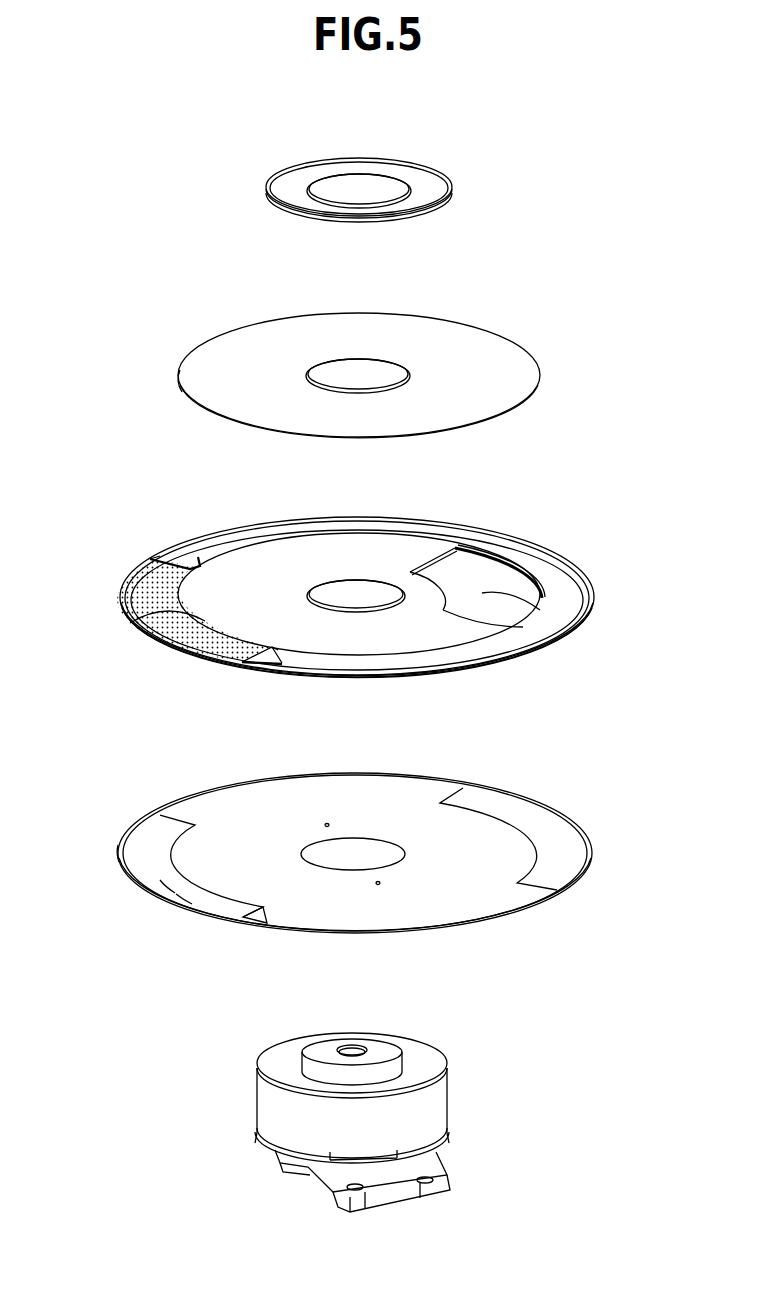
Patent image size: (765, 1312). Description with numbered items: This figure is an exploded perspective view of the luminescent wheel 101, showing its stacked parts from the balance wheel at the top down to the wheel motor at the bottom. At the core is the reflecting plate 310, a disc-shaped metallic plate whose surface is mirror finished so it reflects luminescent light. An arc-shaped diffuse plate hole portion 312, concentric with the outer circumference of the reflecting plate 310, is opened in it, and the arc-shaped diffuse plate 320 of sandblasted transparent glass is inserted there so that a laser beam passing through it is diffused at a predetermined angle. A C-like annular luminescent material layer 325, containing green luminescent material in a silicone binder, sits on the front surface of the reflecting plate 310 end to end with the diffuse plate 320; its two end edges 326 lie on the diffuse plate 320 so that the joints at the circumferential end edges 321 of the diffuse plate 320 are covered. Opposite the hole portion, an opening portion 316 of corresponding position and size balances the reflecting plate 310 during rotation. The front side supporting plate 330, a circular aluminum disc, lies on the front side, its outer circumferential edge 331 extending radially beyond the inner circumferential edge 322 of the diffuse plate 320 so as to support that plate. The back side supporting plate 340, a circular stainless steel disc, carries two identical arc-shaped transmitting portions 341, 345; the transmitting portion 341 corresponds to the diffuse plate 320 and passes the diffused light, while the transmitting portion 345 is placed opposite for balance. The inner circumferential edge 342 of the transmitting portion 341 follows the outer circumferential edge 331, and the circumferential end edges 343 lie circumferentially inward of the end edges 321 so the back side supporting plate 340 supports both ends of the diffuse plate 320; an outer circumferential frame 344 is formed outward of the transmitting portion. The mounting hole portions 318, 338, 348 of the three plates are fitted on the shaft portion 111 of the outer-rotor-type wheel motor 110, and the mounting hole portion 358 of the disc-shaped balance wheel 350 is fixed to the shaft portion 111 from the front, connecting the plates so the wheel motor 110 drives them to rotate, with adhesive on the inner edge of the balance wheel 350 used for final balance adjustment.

The luminescent wheel 101 is at (568, 337).
The wheel motor 110 is at (262, 1192).
The shaft portion 111 is at (377, 1048).
The reflecting plate 310 is at (580, 578).
The diffuse plate hole portion 312 is at (145, 590).
The opening portion 316 is at (540, 610).
The mounting hole portion 318 is at (357, 600).
The diffuse plate 320 is at (147, 636).
The circumferential end edges 321 is at (207, 563).
The inner circumferential edge 322 is at (200, 621).
The luminescent material layer 325 is at (525, 558).
The end edges 326 is at (170, 554).
The front side supporting plate 330 is at (417, 343).
The outer circumferential edge 331 is at (178, 375).
The mounting hole portion 338 is at (340, 375).
The back side supporting plate 340 is at (523, 906).
The transmitting portion 341 is at (183, 897).
The inner circumferential edge 342 is at (168, 878).
The circumferential end edges 343 is at (167, 815).
The outer circumferential frame 344 is at (120, 855).
The transmitting portion 345 is at (522, 815).
The mounting hole portion 348 is at (348, 855).
The balance wheel 350 is at (447, 178).
The mounting hole portion 358 is at (373, 190).